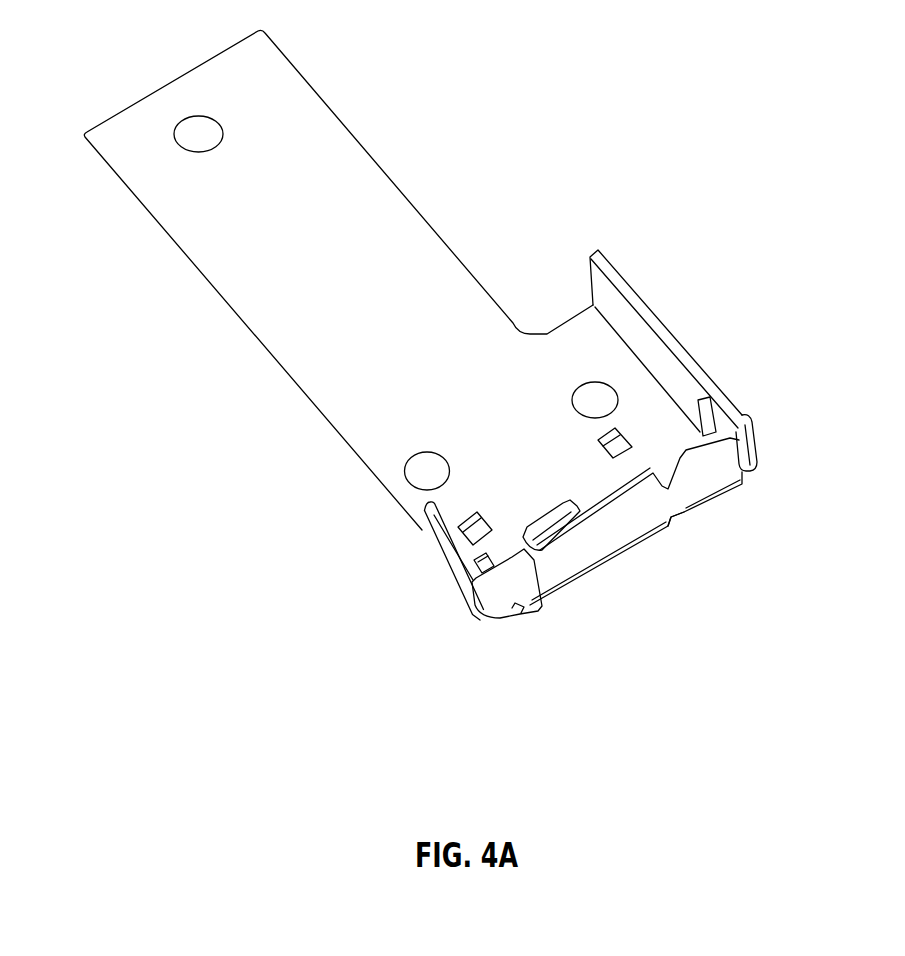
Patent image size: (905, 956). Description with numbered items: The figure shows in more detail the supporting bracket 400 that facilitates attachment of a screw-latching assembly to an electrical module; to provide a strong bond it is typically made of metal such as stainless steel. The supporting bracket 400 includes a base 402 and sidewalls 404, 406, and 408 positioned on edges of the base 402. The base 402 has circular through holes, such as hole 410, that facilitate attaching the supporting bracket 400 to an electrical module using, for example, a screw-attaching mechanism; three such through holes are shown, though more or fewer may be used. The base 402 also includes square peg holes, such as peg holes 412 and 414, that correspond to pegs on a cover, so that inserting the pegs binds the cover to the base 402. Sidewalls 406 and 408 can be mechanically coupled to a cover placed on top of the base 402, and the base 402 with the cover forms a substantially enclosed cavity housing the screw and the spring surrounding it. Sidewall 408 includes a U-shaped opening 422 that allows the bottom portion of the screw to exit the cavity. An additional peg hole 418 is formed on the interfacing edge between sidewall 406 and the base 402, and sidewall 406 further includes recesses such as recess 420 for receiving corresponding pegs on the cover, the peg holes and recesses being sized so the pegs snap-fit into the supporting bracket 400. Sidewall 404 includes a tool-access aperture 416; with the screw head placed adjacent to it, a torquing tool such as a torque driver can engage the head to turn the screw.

The supporting bracket 400 is at (800, 197).
The base 402 is at (287, 330).
The sidewall 404 is at (660, 320).
The sidewall 406 is at (610, 526).
The sidewall 408 is at (442, 537).
The hole 410 is at (200, 138).
The peg hole 412 is at (488, 517).
The peg hole 414 is at (610, 440).
The tool-access aperture 416 is at (710, 413).
The peg hole 418 is at (680, 515).
The recess 420 is at (540, 563).
The U-shaped opening 422 is at (458, 575).